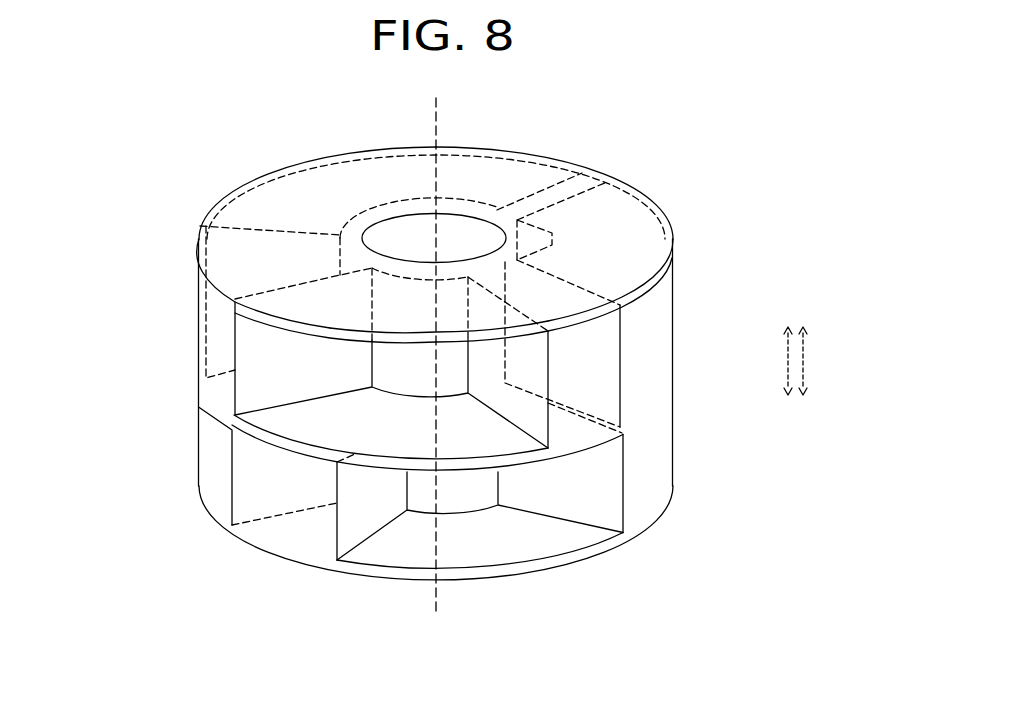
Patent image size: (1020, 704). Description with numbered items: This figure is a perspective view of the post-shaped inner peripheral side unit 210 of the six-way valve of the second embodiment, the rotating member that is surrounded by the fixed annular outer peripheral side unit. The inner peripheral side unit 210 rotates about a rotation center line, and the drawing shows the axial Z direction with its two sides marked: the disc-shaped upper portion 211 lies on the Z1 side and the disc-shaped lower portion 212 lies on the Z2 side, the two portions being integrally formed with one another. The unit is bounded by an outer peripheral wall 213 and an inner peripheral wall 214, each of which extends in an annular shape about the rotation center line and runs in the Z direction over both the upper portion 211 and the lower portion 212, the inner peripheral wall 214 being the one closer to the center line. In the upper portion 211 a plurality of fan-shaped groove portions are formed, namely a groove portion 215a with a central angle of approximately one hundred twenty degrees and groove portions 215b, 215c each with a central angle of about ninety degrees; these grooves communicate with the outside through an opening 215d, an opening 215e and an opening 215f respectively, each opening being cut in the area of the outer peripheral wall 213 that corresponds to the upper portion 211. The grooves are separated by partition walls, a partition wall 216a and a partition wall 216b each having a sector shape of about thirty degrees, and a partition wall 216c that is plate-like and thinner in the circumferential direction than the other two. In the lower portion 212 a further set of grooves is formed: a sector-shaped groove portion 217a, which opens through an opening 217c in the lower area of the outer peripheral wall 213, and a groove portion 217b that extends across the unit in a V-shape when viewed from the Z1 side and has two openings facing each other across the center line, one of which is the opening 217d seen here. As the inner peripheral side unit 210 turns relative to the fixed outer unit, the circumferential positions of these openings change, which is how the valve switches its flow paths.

The inner peripheral side unit 210 is at (104, 105).
The upper portion 211 is at (198, 247).
The lower portion 212 is at (685, 380).
The outer peripheral wall 213 is at (583, 366).
The inner peripheral wall 214 is at (453, 237).
The groove portion 215a is at (383, 173).
The groove portion 215b is at (329, 295).
The groove portion 215c is at (596, 215).
The opening 215d is at (343, 150).
The opening 215e is at (268, 298).
The opening 215f is at (661, 287).
The partition wall 216a is at (248, 252).
The partition wall 216b is at (547, 290).
The partition wall 216c is at (545, 203).
The groove portion 217a is at (499, 530).
The groove portion 217b is at (250, 485).
The opening 217c is at (352, 527).
The opening 217d is at (196, 436).
The Z direction Z is at (811, 361).
The Z1 side Z1 is at (770, 358).
The Z2 side Z2 is at (770, 380).